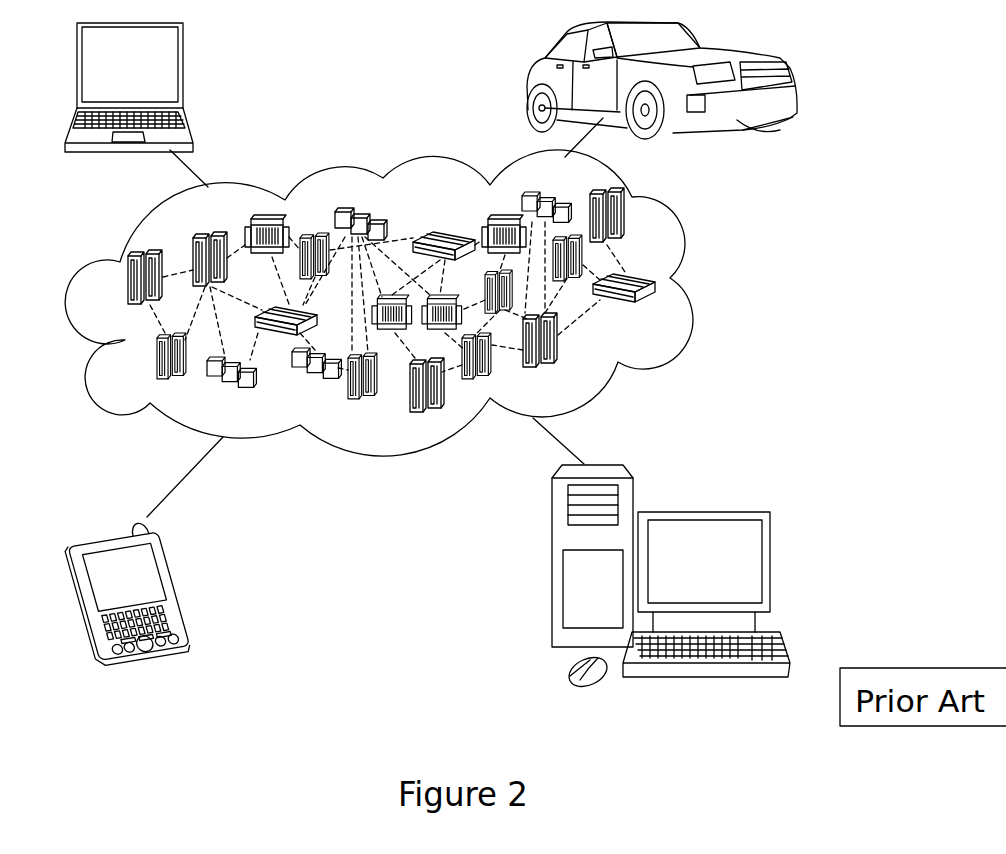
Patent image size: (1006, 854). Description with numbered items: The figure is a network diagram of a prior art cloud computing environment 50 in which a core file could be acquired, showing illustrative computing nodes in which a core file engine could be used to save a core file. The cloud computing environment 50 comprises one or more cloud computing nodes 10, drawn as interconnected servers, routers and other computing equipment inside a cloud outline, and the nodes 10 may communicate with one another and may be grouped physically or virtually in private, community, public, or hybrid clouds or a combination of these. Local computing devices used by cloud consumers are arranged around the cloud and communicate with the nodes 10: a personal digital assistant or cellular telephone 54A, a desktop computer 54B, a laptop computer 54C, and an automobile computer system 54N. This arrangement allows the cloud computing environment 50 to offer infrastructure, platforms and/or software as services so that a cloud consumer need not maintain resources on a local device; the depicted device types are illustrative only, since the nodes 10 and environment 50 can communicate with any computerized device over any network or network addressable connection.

The cloud computing nodes 10 is at (653, 308).
The cloud computing environment 50 is at (705, 288).
The personal digital assistant or cellular telephone 54A is at (177, 587).
The desktop computer 54B is at (702, 511).
The laptop computer 54C is at (185, 71).
The automobile computer system 54N is at (527, 80).